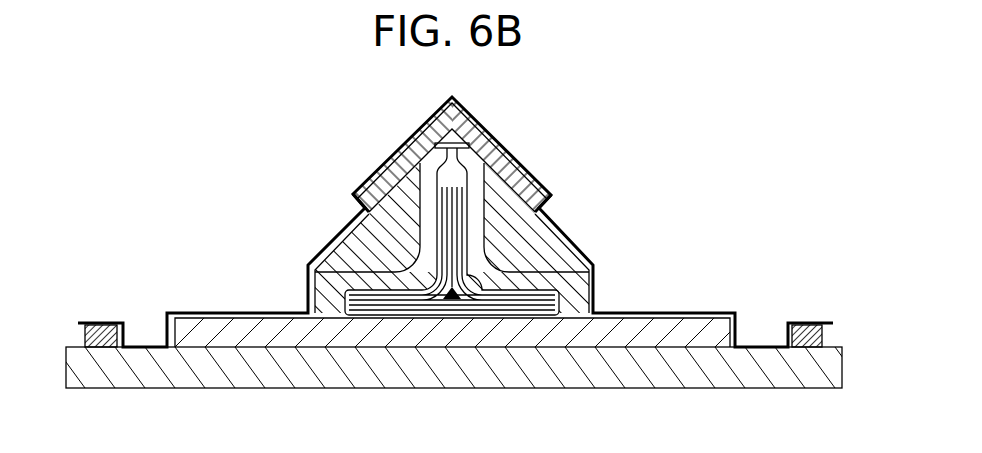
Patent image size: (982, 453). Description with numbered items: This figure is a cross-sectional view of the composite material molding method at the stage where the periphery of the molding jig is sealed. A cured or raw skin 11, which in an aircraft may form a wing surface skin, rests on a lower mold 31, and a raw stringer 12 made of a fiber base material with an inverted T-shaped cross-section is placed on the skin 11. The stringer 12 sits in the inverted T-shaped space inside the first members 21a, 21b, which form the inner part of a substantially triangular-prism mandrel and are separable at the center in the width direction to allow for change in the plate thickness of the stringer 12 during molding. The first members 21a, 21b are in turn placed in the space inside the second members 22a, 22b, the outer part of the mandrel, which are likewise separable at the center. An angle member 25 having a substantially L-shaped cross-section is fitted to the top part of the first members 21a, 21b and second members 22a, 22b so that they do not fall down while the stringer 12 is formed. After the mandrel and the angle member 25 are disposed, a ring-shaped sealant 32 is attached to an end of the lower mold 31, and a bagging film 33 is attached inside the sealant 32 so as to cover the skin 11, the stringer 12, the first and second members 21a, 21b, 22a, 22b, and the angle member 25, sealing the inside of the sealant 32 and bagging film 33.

The skin 11 is at (641, 327).
The stringer 12 is at (449, 318).
The first member 21a is at (327, 295).
The first member 21b is at (577, 296).
The second member 22a is at (363, 241).
The second member 22b is at (545, 243).
The angle member 25 is at (492, 147).
The lower mold 31 is at (535, 376).
The sealant 32 is at (103, 323).
The bagging film 33 is at (708, 312).